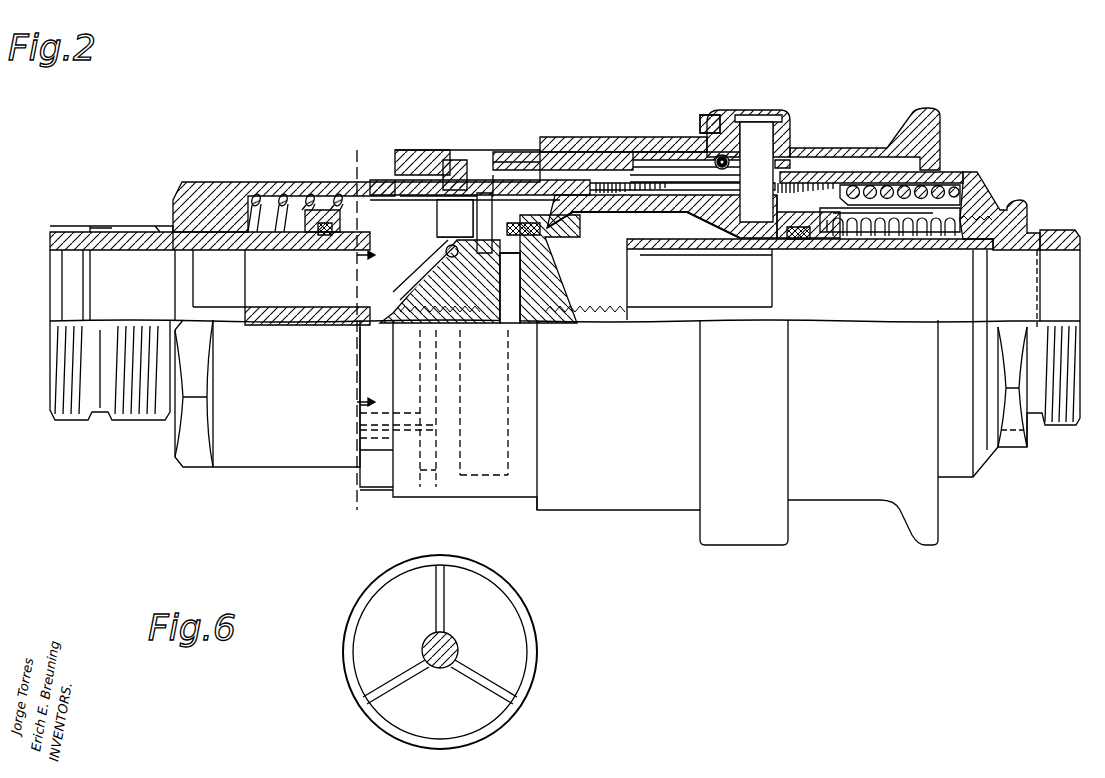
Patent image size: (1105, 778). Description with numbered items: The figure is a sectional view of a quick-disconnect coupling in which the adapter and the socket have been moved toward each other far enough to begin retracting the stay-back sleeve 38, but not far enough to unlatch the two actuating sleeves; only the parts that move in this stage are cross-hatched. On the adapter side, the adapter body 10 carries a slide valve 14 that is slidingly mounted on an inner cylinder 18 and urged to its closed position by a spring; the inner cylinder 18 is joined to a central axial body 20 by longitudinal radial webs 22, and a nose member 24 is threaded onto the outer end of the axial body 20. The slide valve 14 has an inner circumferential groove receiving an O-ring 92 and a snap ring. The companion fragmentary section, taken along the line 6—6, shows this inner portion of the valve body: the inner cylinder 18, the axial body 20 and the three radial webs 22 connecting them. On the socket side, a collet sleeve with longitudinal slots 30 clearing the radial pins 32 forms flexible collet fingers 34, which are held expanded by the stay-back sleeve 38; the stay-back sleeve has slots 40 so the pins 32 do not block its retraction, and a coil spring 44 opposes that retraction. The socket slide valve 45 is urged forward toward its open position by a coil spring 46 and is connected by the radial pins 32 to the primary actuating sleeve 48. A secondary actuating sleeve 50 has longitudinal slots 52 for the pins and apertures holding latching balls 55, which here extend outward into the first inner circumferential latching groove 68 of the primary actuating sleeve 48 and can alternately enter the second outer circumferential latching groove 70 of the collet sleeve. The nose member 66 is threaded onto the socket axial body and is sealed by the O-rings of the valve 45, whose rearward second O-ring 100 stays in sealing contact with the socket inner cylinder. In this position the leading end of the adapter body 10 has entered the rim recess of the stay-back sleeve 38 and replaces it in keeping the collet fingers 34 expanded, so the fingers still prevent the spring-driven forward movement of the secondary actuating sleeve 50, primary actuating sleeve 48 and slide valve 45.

In FIG. 2, the adapter body 10 is at (270, 181).
In FIG. 2, the section line 6— 6 is at (360, 325).
In FIG. 2, the slide valve 14 is at (375, 255).
In FIG. 6, the inner cylinder 18 is at (525, 638).
In FIG. 6, the axial body 20 is at (428, 645).
In FIG. 6, the longitudinal radial webs 22 is at (446, 611).
In FIG. 2, the nose member 24 is at (440, 261).
In FIG. 2, the longitudinal slots 30 is at (805, 172).
In FIG. 2, the radial pins 32 is at (778, 140).
In FIG. 2, the collet fingers 34 is at (448, 160).
In FIG. 2, the stay-back sleeve 38 is at (566, 225).
In FIG. 2, the longitudinal slots 40 is at (645, 200).
In FIG. 2, the coil spring 44 is at (937, 190).
In FIG. 2, the slide valve 45 is at (625, 200).
In FIG. 2, the coil spring 46 is at (940, 238).
In FIG. 2, the primary actuating sleeve 48 is at (590, 137).
In FIG. 2, the secondary actuating sleeve 50 is at (410, 152).
In FIG. 2, the longitudinal slots 52 is at (628, 152).
In FIG. 2, the latching balls 55 is at (718, 155).
In FIG. 2, the nose member 66 is at (562, 269).
In FIG. 2, the first inner circumferential latching groove 68 is at (725, 150).
In FIG. 2, the second outer circumferential latching groove 70 is at (694, 172).
In FIG. 2, the O-ring 92 is at (332, 238).
In FIG. 2, the second O-ring 100 is at (805, 243).